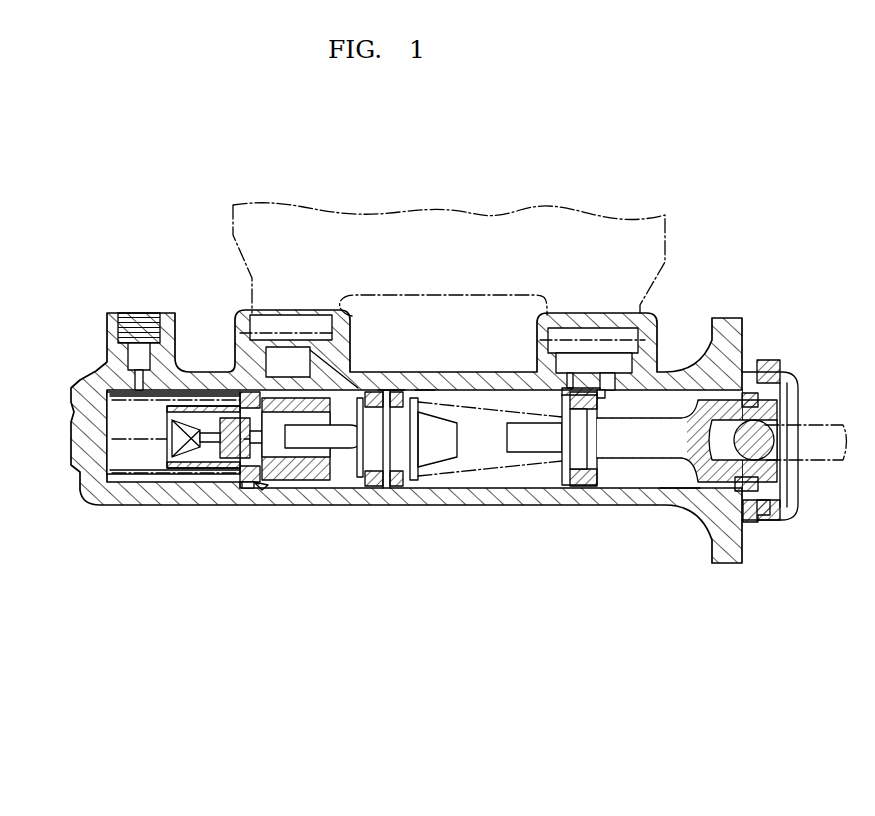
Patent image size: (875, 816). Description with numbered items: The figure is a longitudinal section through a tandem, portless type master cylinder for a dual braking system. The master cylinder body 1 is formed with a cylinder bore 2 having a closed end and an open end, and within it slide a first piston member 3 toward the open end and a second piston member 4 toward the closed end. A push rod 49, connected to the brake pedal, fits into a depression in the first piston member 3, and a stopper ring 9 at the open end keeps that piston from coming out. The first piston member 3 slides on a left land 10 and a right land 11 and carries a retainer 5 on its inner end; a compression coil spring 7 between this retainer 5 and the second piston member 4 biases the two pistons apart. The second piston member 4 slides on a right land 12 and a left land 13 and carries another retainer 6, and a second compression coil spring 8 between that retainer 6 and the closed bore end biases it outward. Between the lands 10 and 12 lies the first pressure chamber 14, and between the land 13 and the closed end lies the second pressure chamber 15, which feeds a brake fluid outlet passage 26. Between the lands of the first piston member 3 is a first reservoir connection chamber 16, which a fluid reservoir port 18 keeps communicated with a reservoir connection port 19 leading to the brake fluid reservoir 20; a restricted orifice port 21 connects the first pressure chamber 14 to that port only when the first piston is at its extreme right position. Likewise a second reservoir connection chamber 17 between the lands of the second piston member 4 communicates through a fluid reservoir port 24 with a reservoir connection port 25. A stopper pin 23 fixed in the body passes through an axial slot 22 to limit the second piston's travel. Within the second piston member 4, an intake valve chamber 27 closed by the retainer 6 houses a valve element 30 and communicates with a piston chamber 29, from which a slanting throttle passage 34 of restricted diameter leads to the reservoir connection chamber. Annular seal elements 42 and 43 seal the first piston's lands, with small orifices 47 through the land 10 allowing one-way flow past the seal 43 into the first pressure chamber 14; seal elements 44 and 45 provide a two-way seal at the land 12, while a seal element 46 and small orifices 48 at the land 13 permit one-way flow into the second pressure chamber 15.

The master cylinder body 1 is at (640, 504).
The cylinder bore 2 is at (450, 488).
The first piston member 3 is at (605, 447).
The second piston member 4 is at (305, 472).
The retainer 5 is at (557, 484).
The retainer 6 is at (238, 470).
The compression coil spring 7 is at (495, 480).
The compression coil spring 8 is at (127, 478).
The stopper ring 9 is at (775, 375).
The left land 10 is at (592, 434).
The right land 11 is at (768, 481).
The right land 12 is at (394, 392).
The left land 13 is at (260, 488).
The first pressure chamber 14 is at (488, 395).
The second pressure chamber 15 is at (185, 398).
The first reservoir connection chamber 16 is at (680, 490).
The second reservoir connection chamber 17 is at (345, 482).
The fluid reservoir port 18 is at (606, 390).
The reservoir connection port 19 is at (660, 320).
The brake fluid reservoir 20 is at (637, 243).
The orifice port 21 is at (566, 392).
The slot 22 is at (376, 392).
The stopper pin 23 is at (312, 478).
The fluid reservoir port 24 is at (335, 432).
The reservoir connection port 25 is at (290, 313).
The brake fluid outlet passage 26 is at (150, 342).
The intake valve chamber 27 is at (165, 475).
The piston chamber 29 is at (250, 478).
The valve element 30 is at (215, 470).
The slanting throttle passage 34 is at (312, 367).
The annular seal element 42 is at (745, 512).
The annular seal element 43 is at (562, 428).
The annular seal element 44 is at (426, 392).
The annular seal element 45 is at (377, 482).
The annular seal element 46 is at (252, 392).
The small orifices 47 is at (602, 394).
The small orifices 48 is at (265, 490).
The push rod 49 is at (812, 430).